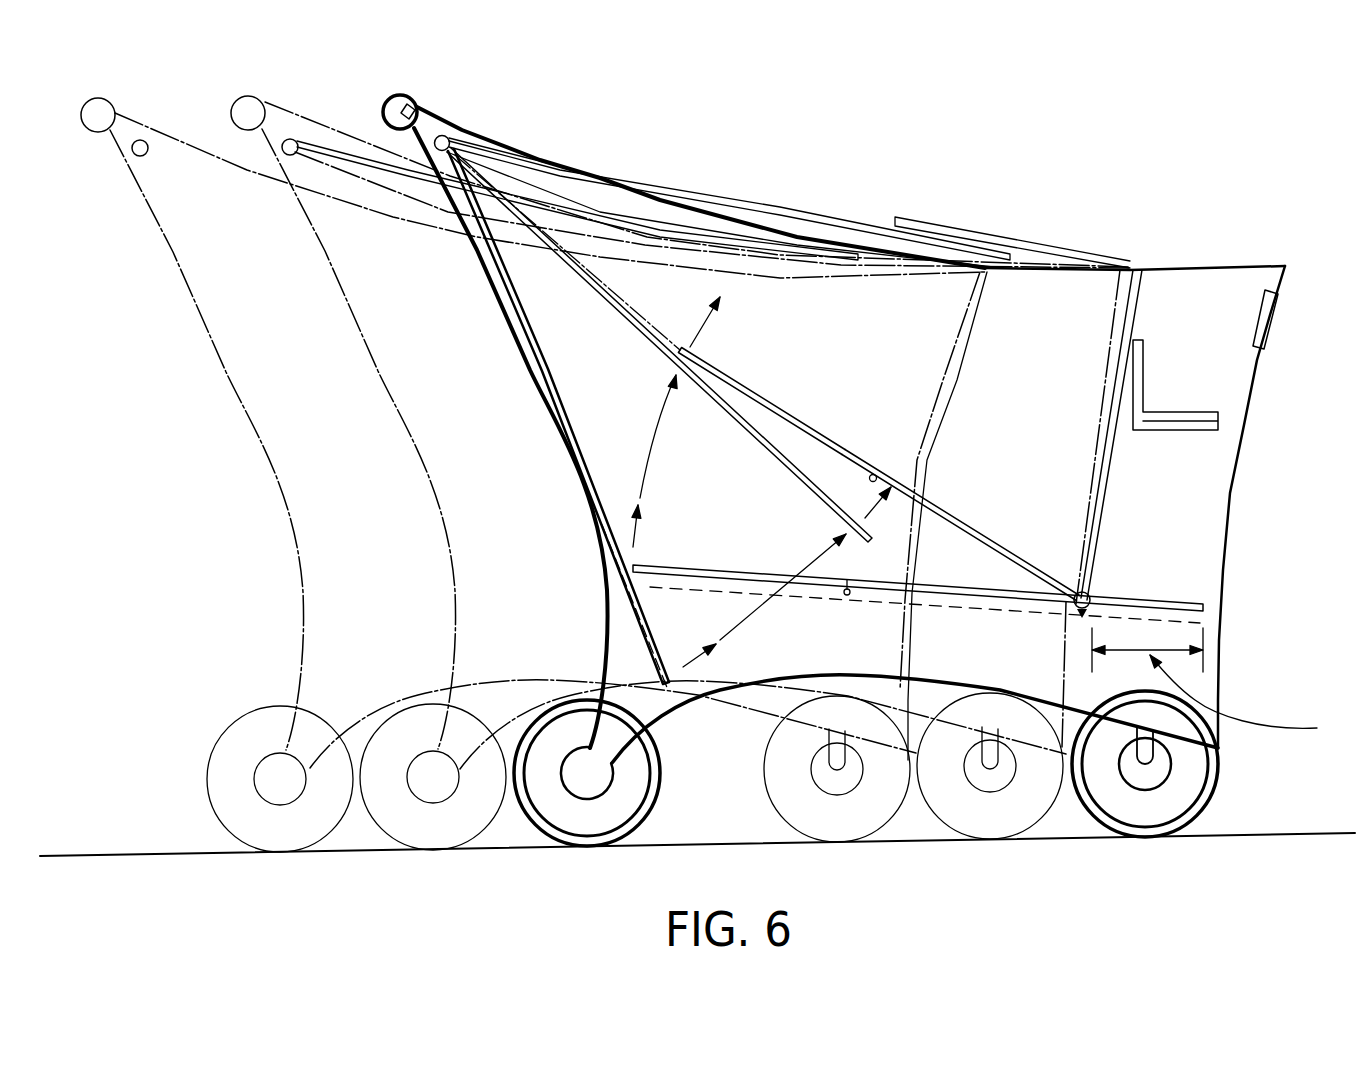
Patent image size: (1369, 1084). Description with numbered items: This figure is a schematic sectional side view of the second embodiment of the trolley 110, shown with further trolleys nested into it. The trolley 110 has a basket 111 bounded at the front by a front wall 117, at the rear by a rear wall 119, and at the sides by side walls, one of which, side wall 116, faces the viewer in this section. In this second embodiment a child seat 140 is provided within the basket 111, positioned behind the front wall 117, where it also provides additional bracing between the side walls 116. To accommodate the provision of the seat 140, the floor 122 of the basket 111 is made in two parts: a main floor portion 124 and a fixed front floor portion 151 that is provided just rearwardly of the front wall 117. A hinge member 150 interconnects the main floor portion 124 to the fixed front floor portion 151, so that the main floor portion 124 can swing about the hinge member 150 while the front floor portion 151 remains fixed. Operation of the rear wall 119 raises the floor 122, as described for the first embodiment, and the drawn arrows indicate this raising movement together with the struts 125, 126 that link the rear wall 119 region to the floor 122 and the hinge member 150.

The shopping cart 110 is at (1281, 202).
The basket 111 is at (1180, 302).
The side wall 116 is at (1222, 358).
The front wall 117 is at (1226, 533).
The rear wall 119 is at (535, 386).
The floor 122 is at (1019, 509).
The main floor portion 124 is at (1007, 543).
The diagonal strut 125 is at (787, 413).
The pivot pin 126 is at (875, 476).
The child seat 140 is at (1181, 405).
The hinge member 150 is at (1082, 610).
The fixed front floor portion 151 is at (1203, 606).